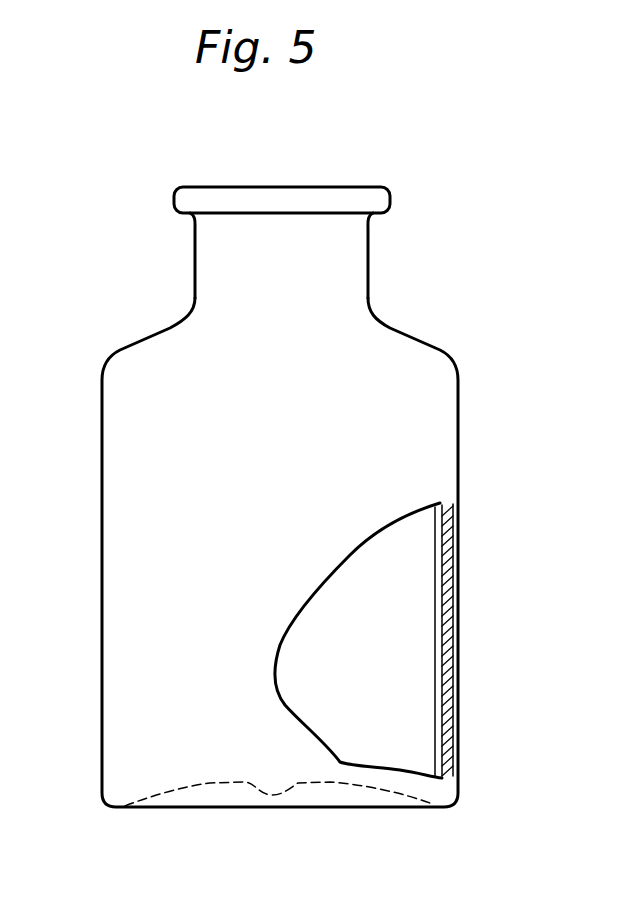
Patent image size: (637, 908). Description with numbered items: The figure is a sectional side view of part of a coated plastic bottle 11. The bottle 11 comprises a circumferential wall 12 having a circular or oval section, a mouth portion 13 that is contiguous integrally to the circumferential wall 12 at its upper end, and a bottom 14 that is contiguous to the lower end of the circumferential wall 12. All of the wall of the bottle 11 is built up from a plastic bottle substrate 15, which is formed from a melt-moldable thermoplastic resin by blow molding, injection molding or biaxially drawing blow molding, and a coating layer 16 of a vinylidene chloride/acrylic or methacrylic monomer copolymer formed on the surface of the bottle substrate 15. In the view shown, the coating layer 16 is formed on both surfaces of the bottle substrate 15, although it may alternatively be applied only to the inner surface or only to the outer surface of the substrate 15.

The bottle 11 is at (300, 522).
The circumferential wall 12 is at (112, 572).
The mouth portion 13 is at (360, 246).
The bottom 14 is at (322, 786).
The plastic bottle substrate 15 is at (395, 640).
The coating layer 16 is at (436, 571).